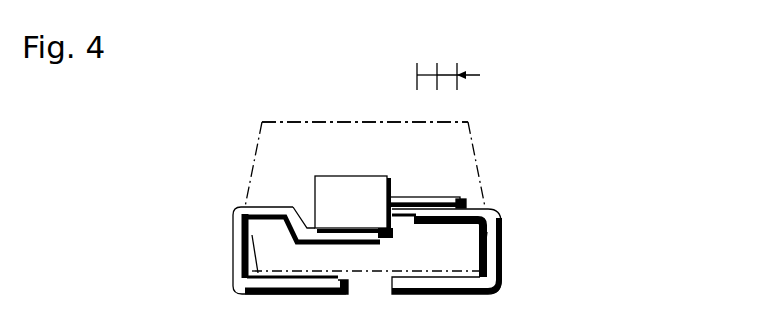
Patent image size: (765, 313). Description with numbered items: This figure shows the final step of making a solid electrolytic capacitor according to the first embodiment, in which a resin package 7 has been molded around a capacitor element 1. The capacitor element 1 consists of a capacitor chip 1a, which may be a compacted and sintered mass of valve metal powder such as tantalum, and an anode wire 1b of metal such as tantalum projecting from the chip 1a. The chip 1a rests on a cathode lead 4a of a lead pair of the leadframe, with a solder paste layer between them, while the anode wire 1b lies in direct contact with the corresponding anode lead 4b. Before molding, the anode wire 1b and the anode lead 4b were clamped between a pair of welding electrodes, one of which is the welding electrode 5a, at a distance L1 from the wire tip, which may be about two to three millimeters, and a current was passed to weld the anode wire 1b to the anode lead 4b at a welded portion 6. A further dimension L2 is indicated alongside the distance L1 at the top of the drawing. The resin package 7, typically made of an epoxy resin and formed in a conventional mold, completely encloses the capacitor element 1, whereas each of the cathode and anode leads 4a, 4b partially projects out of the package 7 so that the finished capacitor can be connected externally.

The capacitor element 1 is at (415, 153).
The capacitor chip 1a is at (345, 188).
The anode wire 1b is at (405, 197).
The cathode lead 4a is at (237, 245).
The anode lead 4b is at (502, 250).
The welding electrode 5a is at (433, 135).
The welded portion 6 is at (440, 197).
The resin package 7 is at (278, 122).
The distance from wire tip L1 is at (450, 68).
The dimension L2 is at (428, 72).